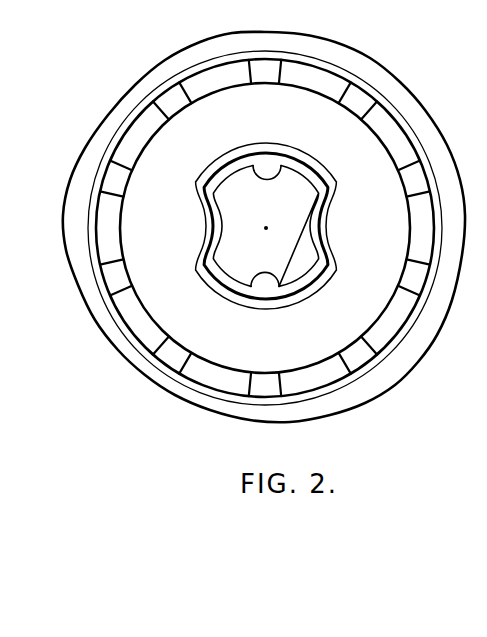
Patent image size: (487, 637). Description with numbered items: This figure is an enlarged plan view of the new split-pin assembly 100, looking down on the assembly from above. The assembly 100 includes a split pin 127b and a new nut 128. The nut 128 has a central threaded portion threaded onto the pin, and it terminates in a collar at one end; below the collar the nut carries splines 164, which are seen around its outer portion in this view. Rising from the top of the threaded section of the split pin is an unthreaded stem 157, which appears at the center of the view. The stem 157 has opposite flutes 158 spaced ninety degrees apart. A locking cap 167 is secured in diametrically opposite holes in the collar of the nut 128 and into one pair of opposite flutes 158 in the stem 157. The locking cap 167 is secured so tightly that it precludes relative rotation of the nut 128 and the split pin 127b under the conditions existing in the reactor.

The split-pin assembly 100 is at (486, 354).
The nut 128 is at (325, 76).
The splines 164 is at (363, 357).
The locking cap 167 is at (332, 200).
The stem 157 is at (292, 237).
The flutes 158 is at (266, 284).
The split pin 127b is at (243, 205).